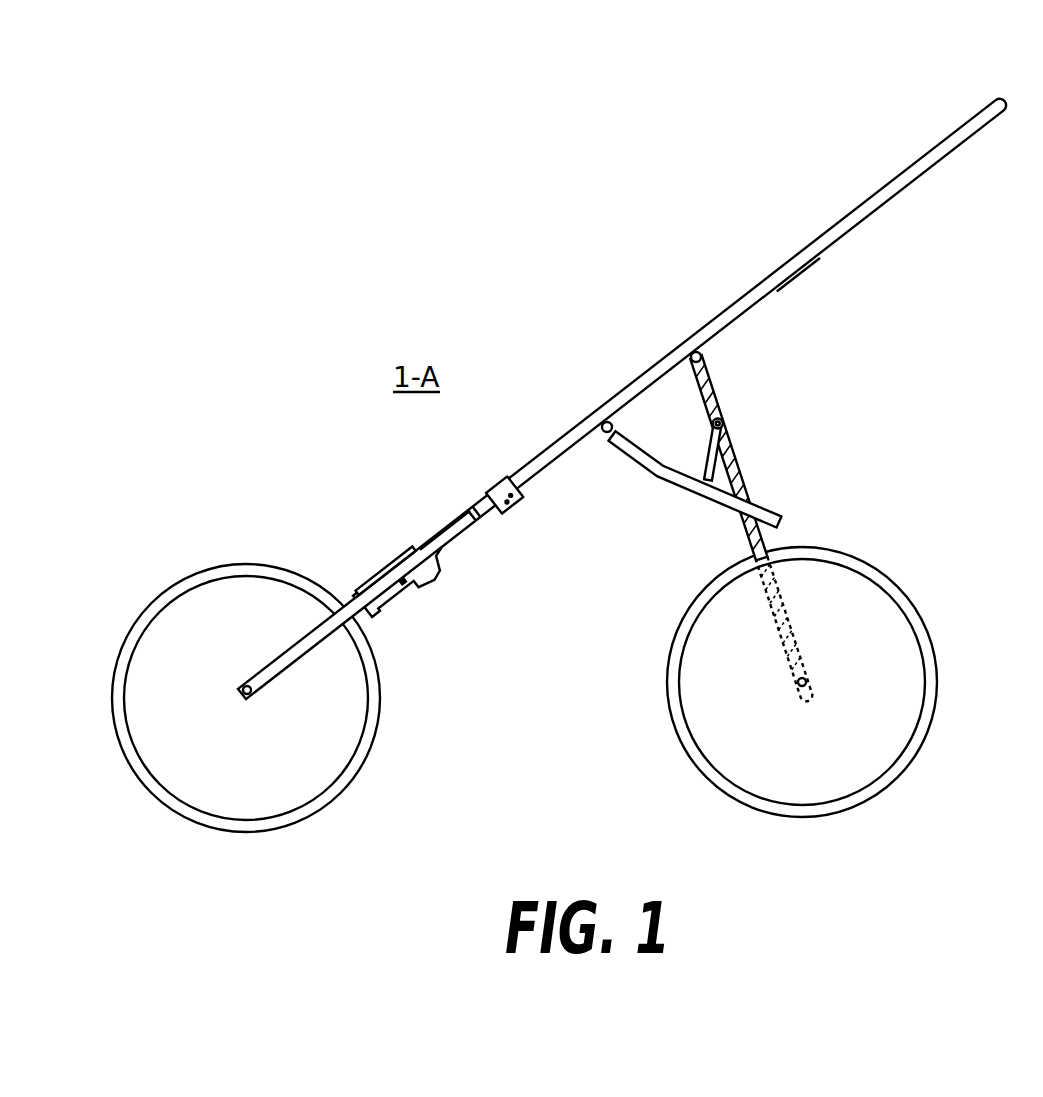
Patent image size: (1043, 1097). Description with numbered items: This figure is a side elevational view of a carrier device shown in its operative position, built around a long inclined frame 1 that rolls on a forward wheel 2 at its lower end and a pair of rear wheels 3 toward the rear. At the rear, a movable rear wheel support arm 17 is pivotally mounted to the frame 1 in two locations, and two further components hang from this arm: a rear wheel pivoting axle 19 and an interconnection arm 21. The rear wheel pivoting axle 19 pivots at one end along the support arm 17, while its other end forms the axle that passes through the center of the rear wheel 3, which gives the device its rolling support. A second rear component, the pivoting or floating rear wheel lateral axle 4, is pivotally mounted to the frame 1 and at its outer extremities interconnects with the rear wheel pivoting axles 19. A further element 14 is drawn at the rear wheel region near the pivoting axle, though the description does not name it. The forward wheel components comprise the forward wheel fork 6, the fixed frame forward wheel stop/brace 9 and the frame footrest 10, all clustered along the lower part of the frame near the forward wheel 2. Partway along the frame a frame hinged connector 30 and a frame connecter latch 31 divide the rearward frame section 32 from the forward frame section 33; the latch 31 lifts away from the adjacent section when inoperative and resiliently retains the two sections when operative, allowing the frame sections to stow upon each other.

The frame 1 is at (807, 246).
The forward wheel 2 is at (361, 767).
The rear wheel 3 is at (929, 738).
The pivoting rear wheel lateral axle 4 is at (714, 382).
The forward wheel fork 6 is at (372, 618).
The fixed frame forward wheel stop/brace 9 is at (362, 578).
The frame footrest 10 is at (403, 561).
The strut lower end 14 is at (786, 521).
The movable rear wheel support arm 17 is at (640, 466).
The rear wheel pivoting axle 19 is at (750, 545).
The interconnection arm 21 is at (707, 448).
The frame hinged connector 30 is at (483, 522).
The frame connecter latch 31 is at (501, 488).
The rearward frame section 32 is at (790, 276).
The forward frame section 33 is at (438, 538).